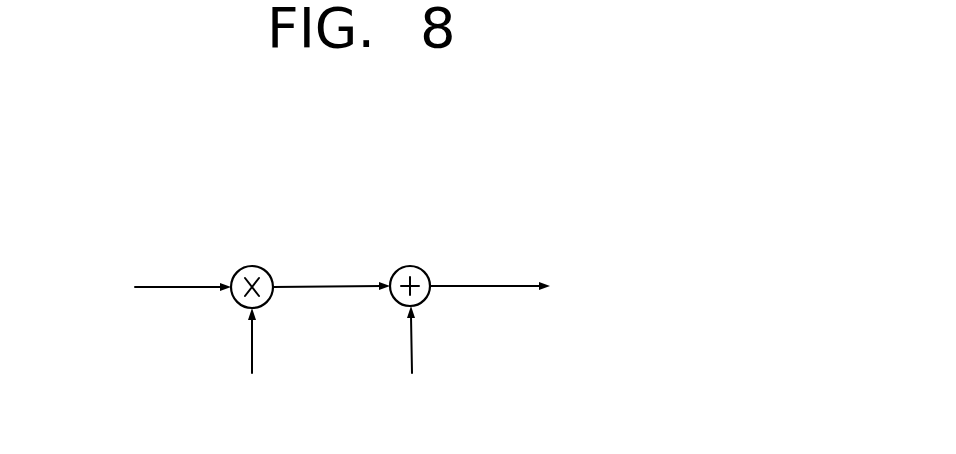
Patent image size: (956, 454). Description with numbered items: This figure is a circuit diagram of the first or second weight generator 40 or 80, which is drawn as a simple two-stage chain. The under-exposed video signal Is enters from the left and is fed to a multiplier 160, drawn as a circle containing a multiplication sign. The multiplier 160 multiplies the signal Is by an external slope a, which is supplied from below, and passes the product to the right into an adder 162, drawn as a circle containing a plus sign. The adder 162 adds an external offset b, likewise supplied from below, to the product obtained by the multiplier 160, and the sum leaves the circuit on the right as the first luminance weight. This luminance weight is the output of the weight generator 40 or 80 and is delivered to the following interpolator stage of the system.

The first weight generator 40 is at (548, 151).
The second weight generator 80 is at (364, 304).
The multiplier 160 is at (252, 266).
The adder 162 is at (410, 266).